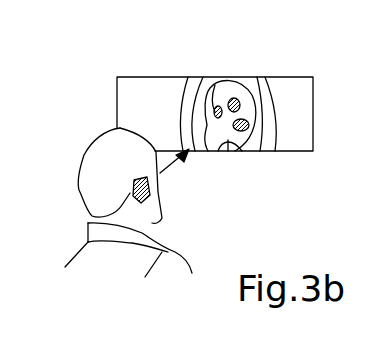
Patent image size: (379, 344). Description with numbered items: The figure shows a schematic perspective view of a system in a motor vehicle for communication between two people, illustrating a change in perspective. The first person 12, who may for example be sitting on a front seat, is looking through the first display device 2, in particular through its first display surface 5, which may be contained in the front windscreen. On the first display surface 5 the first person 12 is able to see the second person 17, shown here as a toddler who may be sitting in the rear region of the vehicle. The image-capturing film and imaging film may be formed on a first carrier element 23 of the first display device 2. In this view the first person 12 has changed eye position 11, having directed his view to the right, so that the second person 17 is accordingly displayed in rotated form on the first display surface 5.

The first display device 2 is at (275, 77).
The first display surface 5 is at (322, 123).
The eye position 11 is at (163, 175).
The first person 12 is at (76, 189).
The second person 17 is at (212, 77).
The first carrier element 23 is at (155, 77).